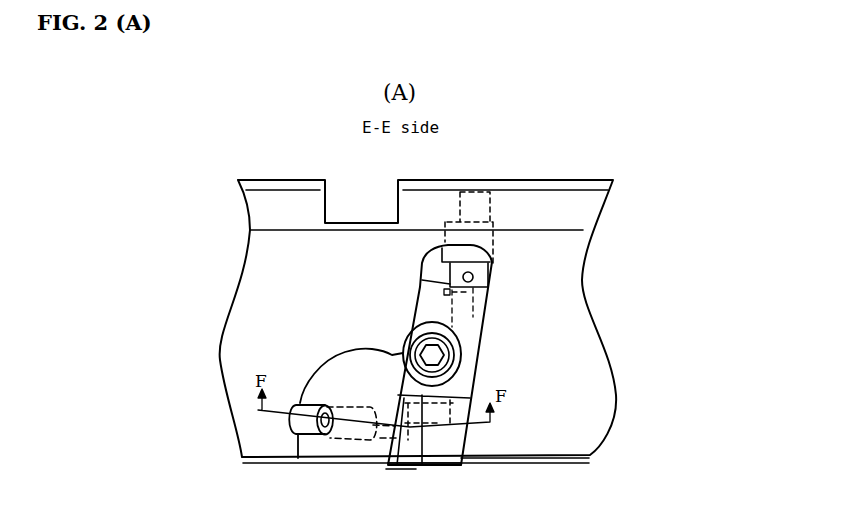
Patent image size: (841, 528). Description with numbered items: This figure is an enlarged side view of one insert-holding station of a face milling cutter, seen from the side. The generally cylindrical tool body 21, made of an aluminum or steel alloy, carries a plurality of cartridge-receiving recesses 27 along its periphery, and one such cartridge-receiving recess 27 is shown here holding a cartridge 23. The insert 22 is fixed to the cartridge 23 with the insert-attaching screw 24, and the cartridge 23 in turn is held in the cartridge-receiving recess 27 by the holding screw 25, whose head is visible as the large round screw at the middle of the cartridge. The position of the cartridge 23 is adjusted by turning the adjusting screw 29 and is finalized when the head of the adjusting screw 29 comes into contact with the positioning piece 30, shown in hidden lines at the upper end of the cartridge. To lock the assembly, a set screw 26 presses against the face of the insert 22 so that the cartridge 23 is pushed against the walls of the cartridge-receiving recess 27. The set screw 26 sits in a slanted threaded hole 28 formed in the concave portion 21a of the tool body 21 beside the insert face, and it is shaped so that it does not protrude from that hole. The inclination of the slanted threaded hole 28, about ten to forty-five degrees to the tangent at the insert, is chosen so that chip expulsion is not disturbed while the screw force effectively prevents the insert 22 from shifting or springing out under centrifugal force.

The tool body 21 is at (573, 328).
The concave portion 21a is at (328, 353).
The insert 22 is at (407, 452).
The cartridge 23 is at (447, 430).
The insert-attaching screw 24 is at (438, 423).
The holding screw 25 is at (452, 355).
The set screw 26 is at (348, 430).
The cartridge-receiving recess 27 is at (435, 263).
The slanted threaded hole 28 is at (297, 420).
The adjusting screw 29 is at (474, 278).
The positioning piece 30 is at (480, 237).